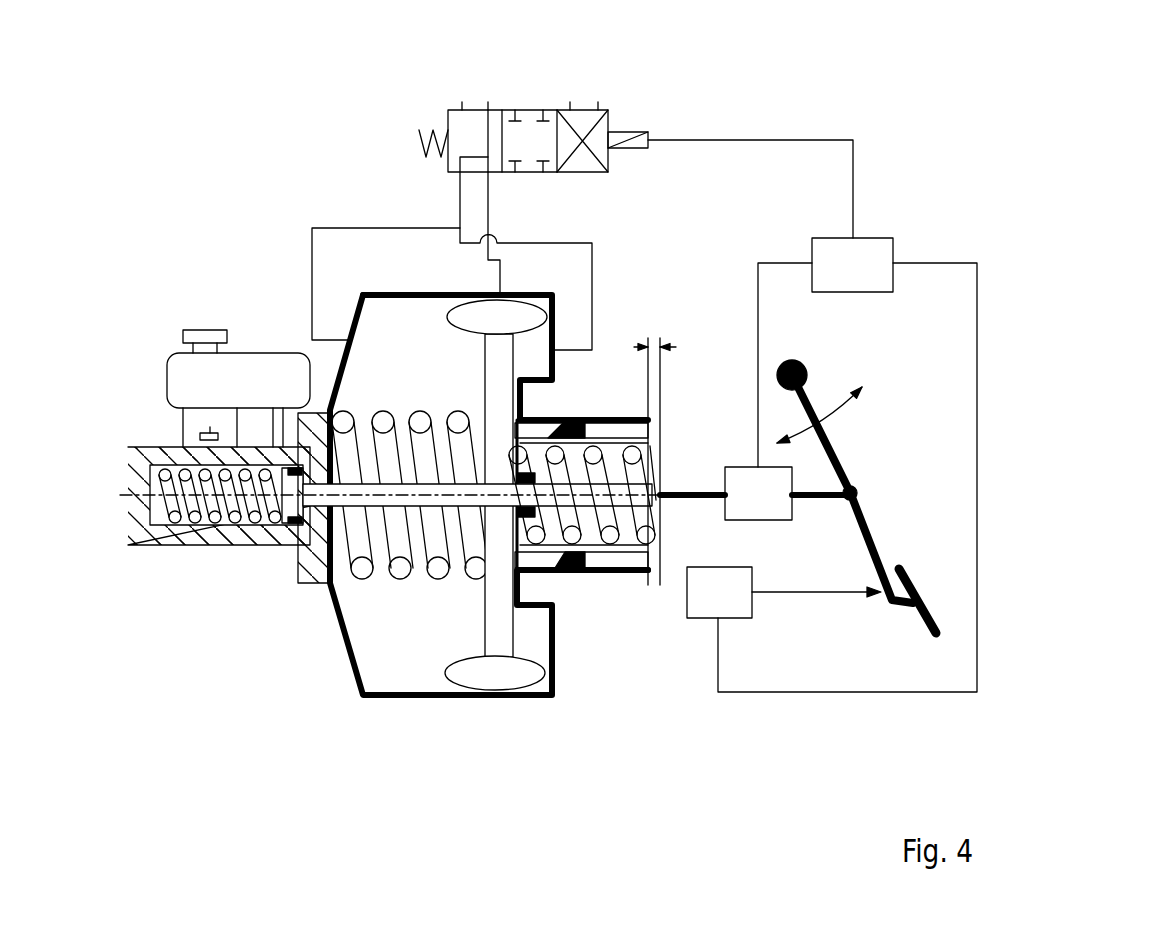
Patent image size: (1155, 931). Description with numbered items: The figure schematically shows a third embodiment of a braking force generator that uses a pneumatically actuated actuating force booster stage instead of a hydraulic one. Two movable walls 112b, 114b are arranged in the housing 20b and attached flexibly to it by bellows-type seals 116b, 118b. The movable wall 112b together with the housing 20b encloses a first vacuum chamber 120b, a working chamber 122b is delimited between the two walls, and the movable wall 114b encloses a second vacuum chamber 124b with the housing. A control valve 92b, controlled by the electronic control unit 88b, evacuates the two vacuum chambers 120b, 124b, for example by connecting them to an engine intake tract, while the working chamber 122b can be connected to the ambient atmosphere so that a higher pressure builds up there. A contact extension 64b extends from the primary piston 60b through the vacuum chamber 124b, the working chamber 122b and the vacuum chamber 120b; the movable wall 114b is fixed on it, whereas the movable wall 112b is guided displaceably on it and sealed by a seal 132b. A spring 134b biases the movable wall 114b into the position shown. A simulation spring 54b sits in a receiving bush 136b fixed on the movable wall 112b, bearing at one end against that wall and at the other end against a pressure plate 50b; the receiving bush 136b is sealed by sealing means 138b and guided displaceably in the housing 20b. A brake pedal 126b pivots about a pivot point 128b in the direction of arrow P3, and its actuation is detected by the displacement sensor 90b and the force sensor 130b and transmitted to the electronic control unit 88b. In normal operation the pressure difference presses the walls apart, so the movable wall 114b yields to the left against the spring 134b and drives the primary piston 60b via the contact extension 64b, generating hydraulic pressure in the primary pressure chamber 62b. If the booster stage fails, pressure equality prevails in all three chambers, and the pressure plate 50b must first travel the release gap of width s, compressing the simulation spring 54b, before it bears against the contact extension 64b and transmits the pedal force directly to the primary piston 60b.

The control valve 92b is at (610, 115).
The first vacuum chamber 120b is at (553, 352).
The sealing means 138b is at (578, 425).
The pressure plate 50b is at (640, 460).
The electronic control unit 88b is at (880, 238).
The working chamber 122b is at (500, 363).
The second vacuum chamber 124b is at (378, 378).
The pivot point 128b is at (807, 367).
The arrow P3 is at (847, 418).
The distance s is at (663, 344).
The brake pedal 126b is at (923, 597).
The primary pressure chamber 62b is at (133, 547).
The housing 20b is at (197, 547).
The primary piston 60b is at (285, 530).
The contact extension 64b is at (330, 580).
The spring 134b is at (400, 595).
The movable wall 114b is at (475, 640).
The bellows-type seal 116b is at (435, 695).
The movable wall 112b is at (490, 645).
The bellows-type seal 118b is at (547, 687).
The seal 132b is at (545, 565).
The receiving bush 136b is at (593, 565).
The simulation spring 54b is at (667, 560).
The displacement sensor 90b is at (752, 615).
The force sensor 130b is at (792, 521).